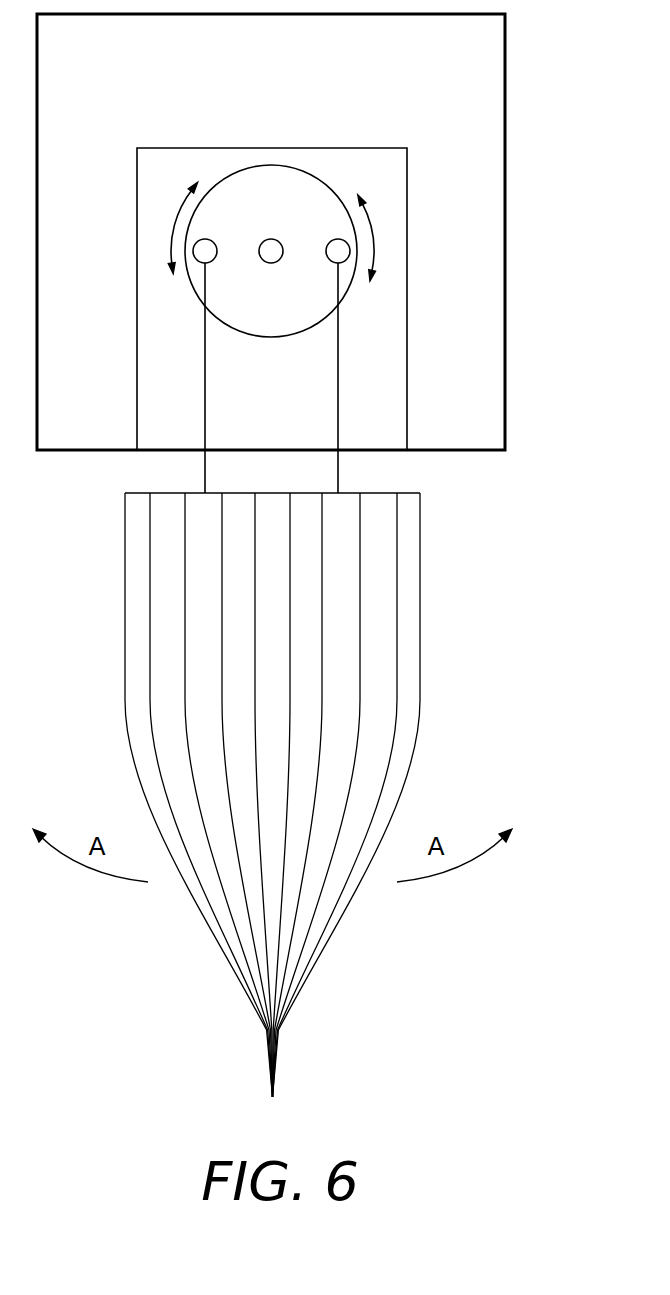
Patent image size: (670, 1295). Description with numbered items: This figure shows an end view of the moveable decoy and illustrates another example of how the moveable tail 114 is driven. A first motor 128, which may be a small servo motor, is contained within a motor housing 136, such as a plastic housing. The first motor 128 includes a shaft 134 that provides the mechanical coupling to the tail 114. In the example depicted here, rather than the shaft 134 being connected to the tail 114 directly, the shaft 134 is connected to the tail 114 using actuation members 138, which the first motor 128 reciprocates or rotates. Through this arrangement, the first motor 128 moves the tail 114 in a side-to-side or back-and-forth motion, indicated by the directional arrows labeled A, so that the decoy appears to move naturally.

The tail 114 is at (420, 665).
The first motor 128 is at (237, 148).
The shaft 134 is at (323, 183).
The motor housing 136 is at (505, 161).
The actuation member 138 is at (205, 387).